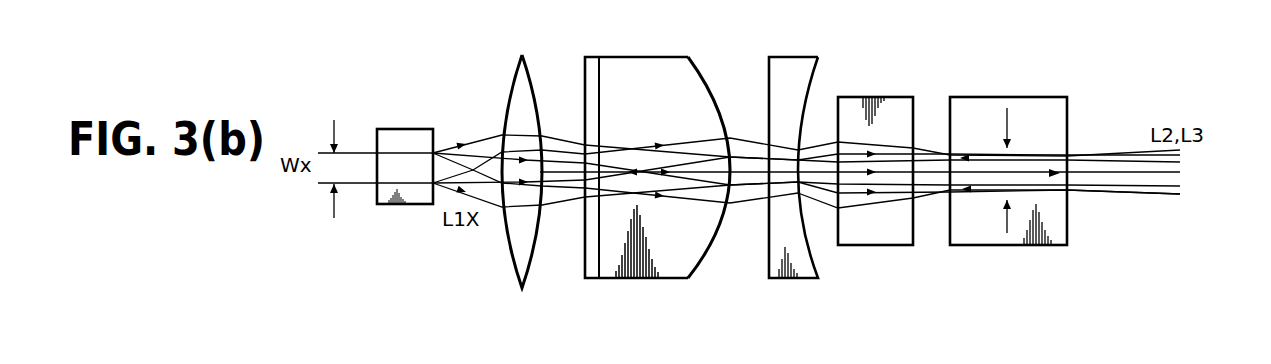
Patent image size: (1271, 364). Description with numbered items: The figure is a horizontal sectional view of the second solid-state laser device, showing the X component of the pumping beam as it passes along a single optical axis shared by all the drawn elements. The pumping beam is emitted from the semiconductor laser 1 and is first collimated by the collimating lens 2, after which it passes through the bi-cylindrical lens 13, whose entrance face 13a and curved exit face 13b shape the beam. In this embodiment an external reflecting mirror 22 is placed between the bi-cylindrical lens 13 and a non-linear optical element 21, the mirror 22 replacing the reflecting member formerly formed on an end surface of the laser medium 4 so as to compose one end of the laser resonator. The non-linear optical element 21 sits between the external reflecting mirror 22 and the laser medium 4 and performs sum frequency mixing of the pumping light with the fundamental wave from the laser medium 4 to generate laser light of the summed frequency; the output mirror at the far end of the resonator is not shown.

The semiconductor laser 1 is at (422, 129).
The collimating lens 2 is at (517, 80).
The bi-cylindrical lens 13 is at (650, 139).
The incident plane surface of element 13 13a is at (585, 80).
The convex exit surface of element 13 13b is at (705, 75).
The external reflecting mirror 22 is at (818, 66).
The non-linear optical element 21 is at (892, 246).
The laser medium 4 is at (1033, 97).